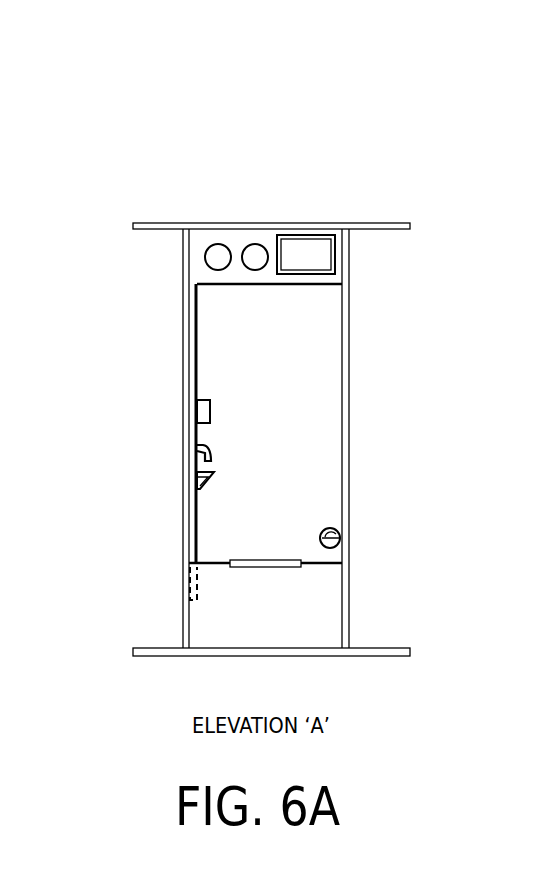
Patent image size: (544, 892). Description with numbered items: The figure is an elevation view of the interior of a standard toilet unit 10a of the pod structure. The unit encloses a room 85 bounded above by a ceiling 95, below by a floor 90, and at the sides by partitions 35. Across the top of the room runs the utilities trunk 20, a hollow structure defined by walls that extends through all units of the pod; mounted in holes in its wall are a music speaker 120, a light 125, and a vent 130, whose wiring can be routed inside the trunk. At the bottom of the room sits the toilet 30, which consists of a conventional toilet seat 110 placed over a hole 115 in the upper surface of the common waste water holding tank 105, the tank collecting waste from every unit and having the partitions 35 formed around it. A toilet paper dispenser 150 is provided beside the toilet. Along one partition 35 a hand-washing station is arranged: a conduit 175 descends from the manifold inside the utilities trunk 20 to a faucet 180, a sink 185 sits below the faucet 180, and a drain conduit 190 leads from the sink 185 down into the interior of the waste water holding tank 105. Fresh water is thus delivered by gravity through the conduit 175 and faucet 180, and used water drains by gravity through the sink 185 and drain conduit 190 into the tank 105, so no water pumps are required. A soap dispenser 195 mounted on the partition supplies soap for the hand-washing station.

The standard toilet unit 10a is at (165, 184).
The ceiling 95 is at (373, 222).
The floor 90 is at (322, 657).
The partitions 35 is at (182, 310).
The music speaker 120 is at (219, 244).
The light 125 is at (256, 244).
The vent 130 is at (305, 236).
The utilities trunk 20 is at (290, 286).
The conduit 175 is at (193, 357).
The room 85 is at (286, 373).
The soap dispenser 195 is at (205, 408).
The faucet 180 is at (199, 447).
The sink 185 is at (198, 480).
The drain conduit 190 is at (197, 537).
The toilet seat 110 is at (286, 560).
The hole 115 is at (232, 571).
The toilet paper dispenser 150 is at (339, 528).
The toilet 30 is at (263, 534).
The waste water holding tank 105 is at (322, 600).